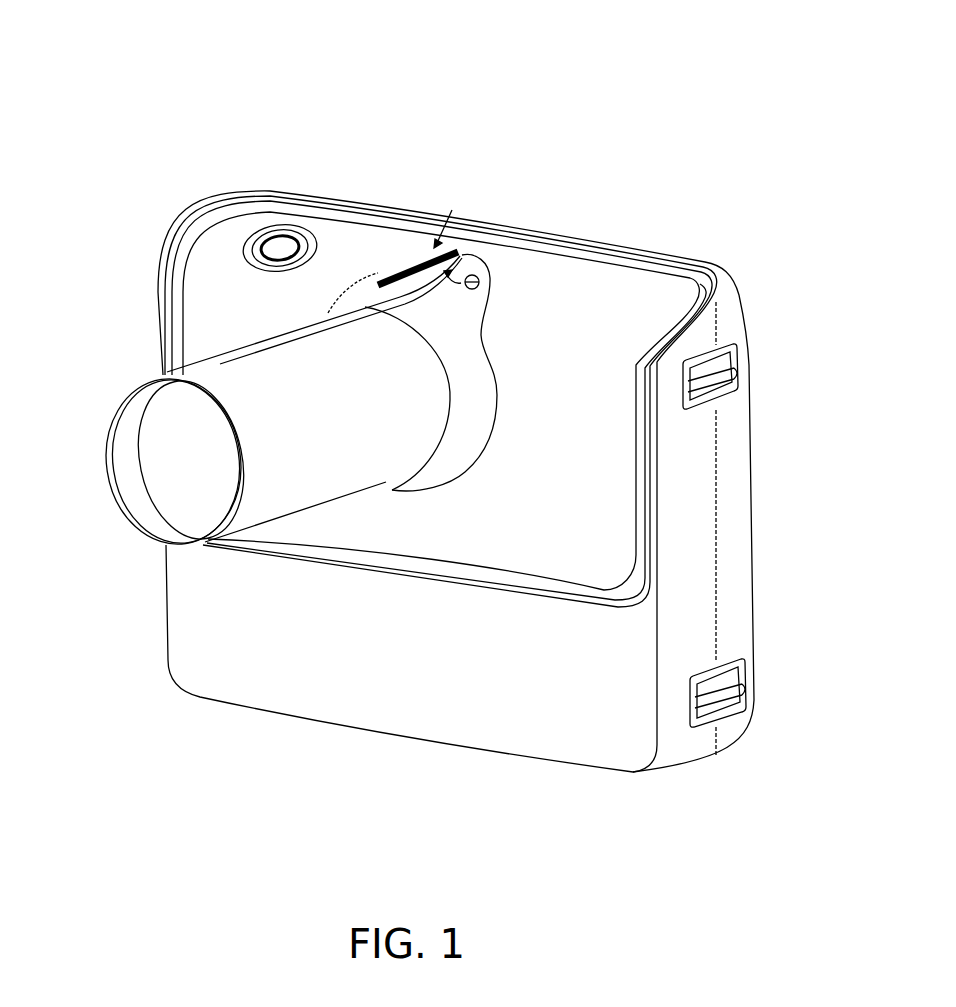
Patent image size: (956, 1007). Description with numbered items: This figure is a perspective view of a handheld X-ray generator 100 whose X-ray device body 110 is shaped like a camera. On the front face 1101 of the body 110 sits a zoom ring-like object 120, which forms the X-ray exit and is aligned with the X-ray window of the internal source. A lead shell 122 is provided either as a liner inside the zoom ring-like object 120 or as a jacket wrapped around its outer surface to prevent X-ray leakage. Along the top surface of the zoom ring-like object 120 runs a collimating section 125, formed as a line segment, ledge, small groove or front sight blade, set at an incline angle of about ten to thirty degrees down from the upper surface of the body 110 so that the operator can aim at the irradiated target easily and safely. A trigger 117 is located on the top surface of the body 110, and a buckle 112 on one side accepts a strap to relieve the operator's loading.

The handheld X-ray generator 100 is at (473, 84).
The X-ray device body 110 is at (552, 657).
The front panel of housing 1101 is at (588, 288).
The buckle 112 is at (710, 727).
The trigger 117 is at (267, 235).
The zoom ring-like object 120 is at (330, 418).
The lead shell 122 is at (122, 392).
The collimating section 125 is at (297, 343).